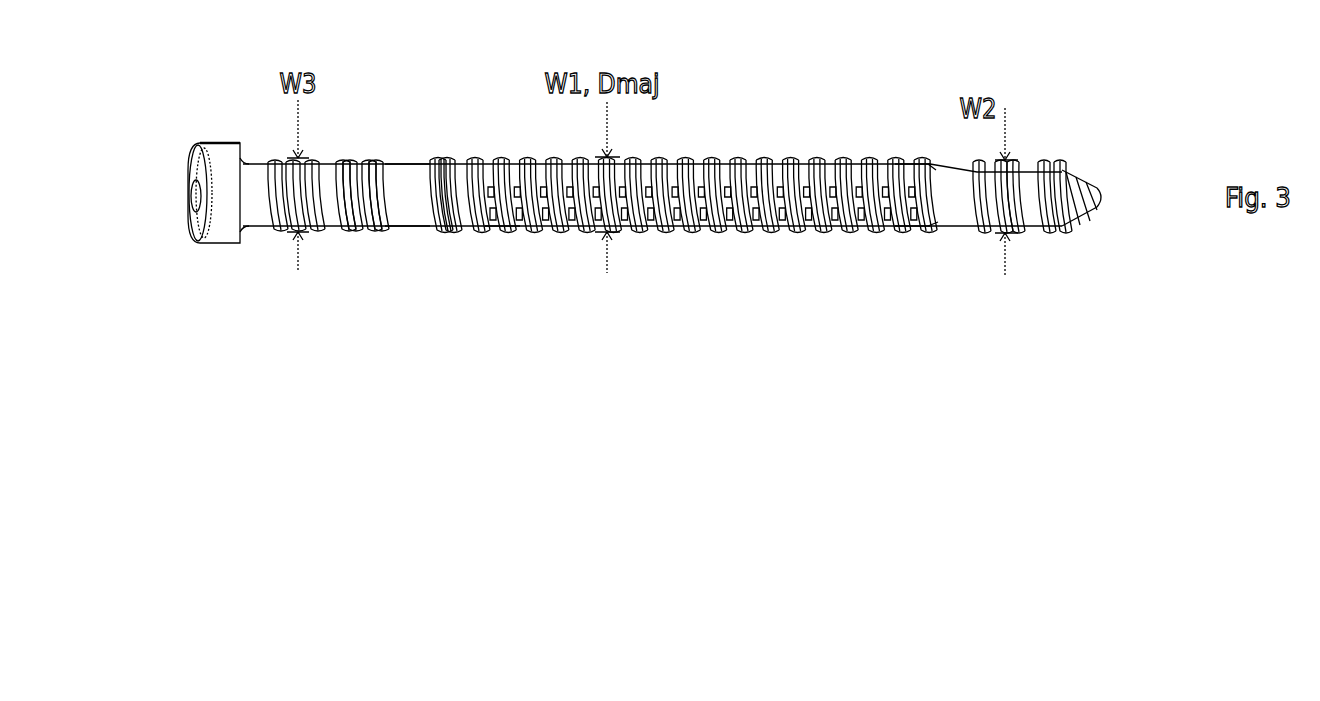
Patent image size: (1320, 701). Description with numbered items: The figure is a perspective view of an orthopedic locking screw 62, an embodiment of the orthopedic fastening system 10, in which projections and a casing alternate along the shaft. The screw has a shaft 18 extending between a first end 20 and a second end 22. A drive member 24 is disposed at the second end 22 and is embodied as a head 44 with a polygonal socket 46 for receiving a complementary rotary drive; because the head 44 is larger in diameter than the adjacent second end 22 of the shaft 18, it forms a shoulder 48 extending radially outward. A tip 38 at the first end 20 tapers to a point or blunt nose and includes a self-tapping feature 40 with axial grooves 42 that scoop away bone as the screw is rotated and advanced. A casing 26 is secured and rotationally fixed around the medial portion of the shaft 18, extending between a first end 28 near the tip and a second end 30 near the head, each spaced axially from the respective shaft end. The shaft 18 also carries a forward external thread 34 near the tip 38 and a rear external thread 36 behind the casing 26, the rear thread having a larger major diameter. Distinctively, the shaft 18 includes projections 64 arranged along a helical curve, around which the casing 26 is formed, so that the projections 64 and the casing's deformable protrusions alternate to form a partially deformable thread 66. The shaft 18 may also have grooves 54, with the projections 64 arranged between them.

The orthopedic fastening system 10 is at (1084, 94).
The shaft 18 is at (402, 178).
The first end of the shaft 20 is at (1103, 197).
The second end of the shaft 22 is at (248, 213).
The drive member 24 is at (188, 187).
The casing 26 is at (557, 230).
The first end of the casing 28 is at (927, 217).
The second end of the casing 30 is at (430, 233).
The forward external thread 34 is at (1040, 227).
The rear external thread 36 is at (322, 230).
The tip 38 is at (1087, 180).
The self-tapping feature 40 is at (1087, 208).
The axial grooves 42 is at (1087, 220).
The head 44 is at (215, 143).
The polygonal socket 46 is at (188, 200).
The shoulder 48 is at (218, 157).
The groove 54 is at (940, 177).
The orthopedic locking screw 62 is at (532, 168).
The projections 64 is at (747, 160).
The partially deformable thread 66 is at (500, 230).